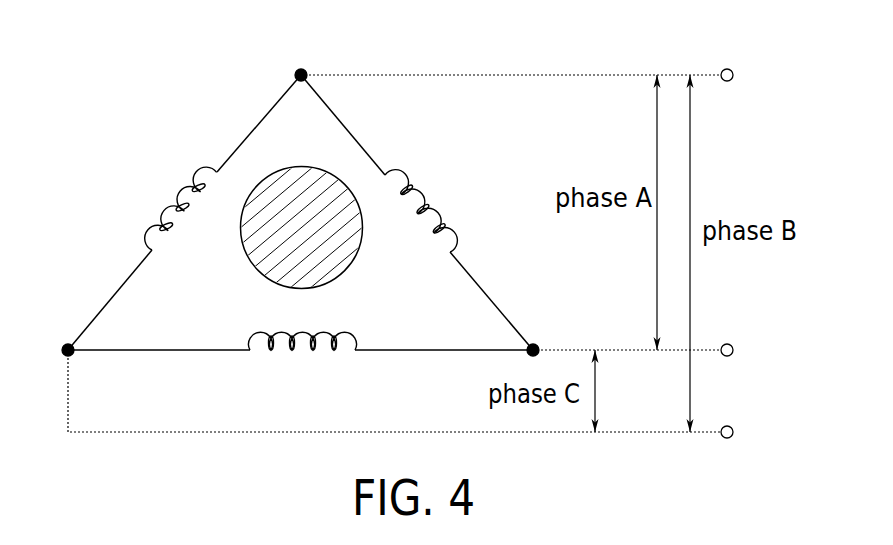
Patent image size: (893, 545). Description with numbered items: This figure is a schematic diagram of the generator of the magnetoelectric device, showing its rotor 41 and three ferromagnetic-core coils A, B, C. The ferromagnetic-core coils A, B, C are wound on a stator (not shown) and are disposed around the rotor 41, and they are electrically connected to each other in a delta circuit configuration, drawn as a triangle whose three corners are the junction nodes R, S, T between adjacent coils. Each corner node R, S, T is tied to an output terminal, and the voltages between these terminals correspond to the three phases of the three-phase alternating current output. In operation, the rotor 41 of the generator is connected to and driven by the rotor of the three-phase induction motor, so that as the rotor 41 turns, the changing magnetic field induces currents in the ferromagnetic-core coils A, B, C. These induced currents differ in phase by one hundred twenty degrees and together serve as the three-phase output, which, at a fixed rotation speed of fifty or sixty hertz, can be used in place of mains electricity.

The rotor 41 is at (270, 176).
The ferromagnetic-core coil A is at (424, 208).
The ferromagnetic-core coil B is at (178, 206).
The ferromagnetic-core coil C is at (303, 361).
The terminal R is at (301, 59).
The terminal S is at (54, 350).
The terminal T is at (538, 335).